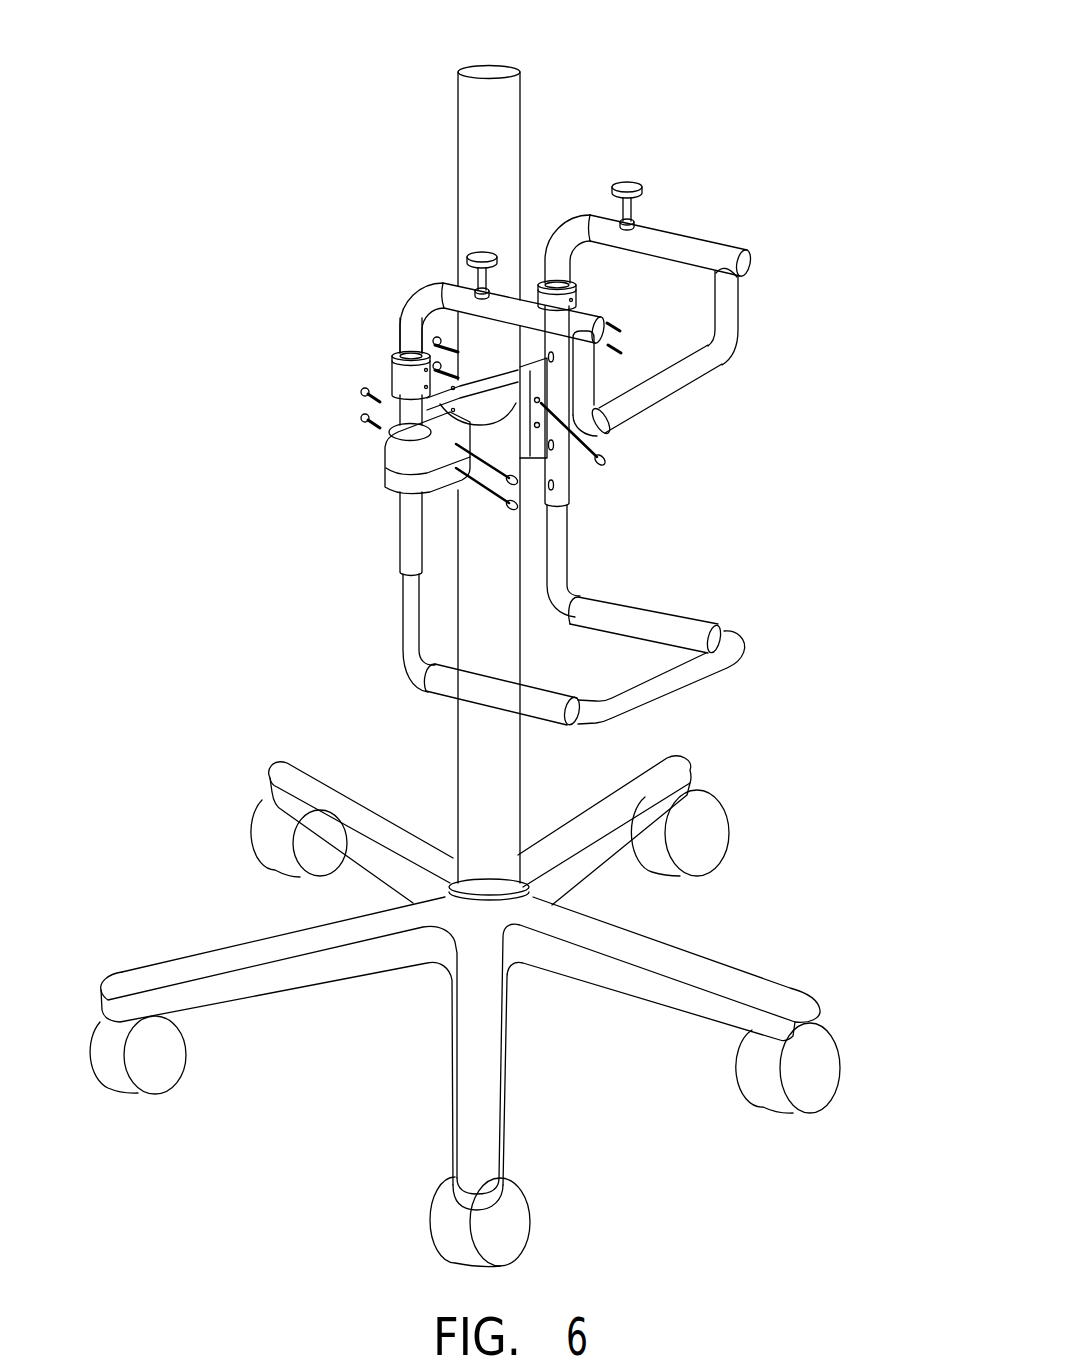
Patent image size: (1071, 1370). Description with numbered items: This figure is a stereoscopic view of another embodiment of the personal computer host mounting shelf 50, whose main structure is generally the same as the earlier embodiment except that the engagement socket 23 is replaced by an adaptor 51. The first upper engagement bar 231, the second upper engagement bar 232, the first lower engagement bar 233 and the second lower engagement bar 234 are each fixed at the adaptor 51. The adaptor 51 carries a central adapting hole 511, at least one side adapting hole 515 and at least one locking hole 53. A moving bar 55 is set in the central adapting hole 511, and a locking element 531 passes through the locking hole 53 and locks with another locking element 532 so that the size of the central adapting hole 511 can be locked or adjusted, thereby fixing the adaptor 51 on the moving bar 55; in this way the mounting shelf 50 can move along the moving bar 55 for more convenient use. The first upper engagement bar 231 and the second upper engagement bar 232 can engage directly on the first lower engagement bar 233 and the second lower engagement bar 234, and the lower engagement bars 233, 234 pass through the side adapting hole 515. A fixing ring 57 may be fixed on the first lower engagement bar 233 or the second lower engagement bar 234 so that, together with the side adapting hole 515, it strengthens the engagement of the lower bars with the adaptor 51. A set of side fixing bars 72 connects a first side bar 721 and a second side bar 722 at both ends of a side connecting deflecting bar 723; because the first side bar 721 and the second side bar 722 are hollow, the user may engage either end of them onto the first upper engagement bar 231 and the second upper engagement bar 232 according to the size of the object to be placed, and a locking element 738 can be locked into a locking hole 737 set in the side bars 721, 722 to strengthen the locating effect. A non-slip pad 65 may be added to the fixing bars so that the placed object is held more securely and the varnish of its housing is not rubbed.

The personal computer host mounting shelf 50 is at (769, 78).
The moving bar 55 is at (470, 130).
The engagement socket 23 is at (402, 300).
The first upper engagement bar 231 is at (438, 297).
The second upper engagement bar 232 is at (583, 224).
The first lower engagement bar 233 is at (400, 545).
The second lower engagement bar 234 is at (568, 481).
The fixing ring 57 is at (398, 350).
The adaptor 51 is at (385, 460).
The central adapting hole 511 is at (403, 388).
The side adapting hole 515 is at (392, 425).
The locking element 532 is at (395, 433).
The locking hole 53 is at (388, 468).
The locking element 531 is at (528, 503).
The set of side fixing bars 72 is at (750, 251).
The first side bar 721 is at (600, 322).
The second side bar 722 is at (692, 247).
The second rod 723 is at (733, 317).
The locking hole 737 is at (639, 219).
The locking element 738 is at (627, 184).
The non-slip pad 65 is at (702, 368).